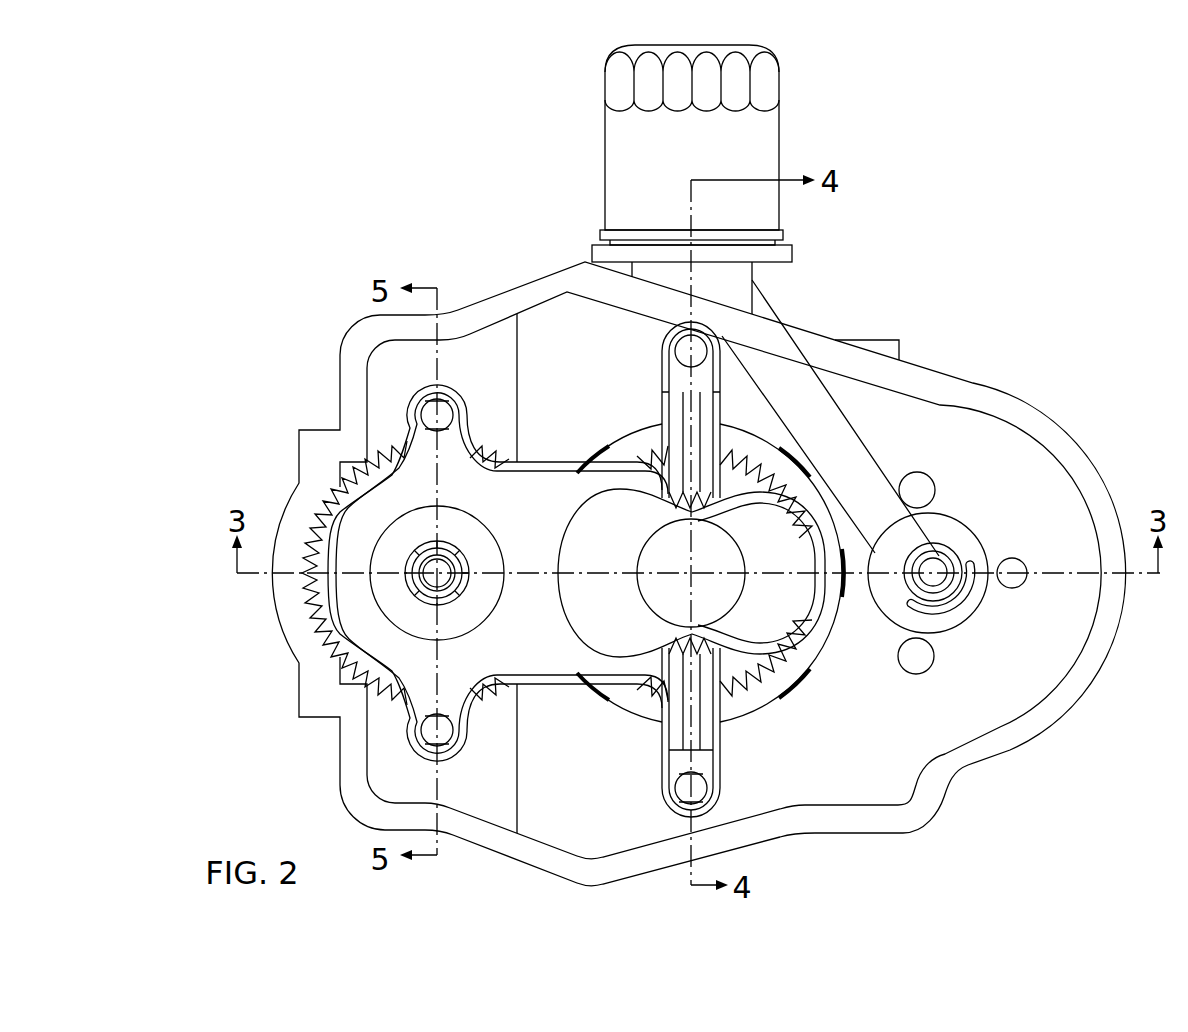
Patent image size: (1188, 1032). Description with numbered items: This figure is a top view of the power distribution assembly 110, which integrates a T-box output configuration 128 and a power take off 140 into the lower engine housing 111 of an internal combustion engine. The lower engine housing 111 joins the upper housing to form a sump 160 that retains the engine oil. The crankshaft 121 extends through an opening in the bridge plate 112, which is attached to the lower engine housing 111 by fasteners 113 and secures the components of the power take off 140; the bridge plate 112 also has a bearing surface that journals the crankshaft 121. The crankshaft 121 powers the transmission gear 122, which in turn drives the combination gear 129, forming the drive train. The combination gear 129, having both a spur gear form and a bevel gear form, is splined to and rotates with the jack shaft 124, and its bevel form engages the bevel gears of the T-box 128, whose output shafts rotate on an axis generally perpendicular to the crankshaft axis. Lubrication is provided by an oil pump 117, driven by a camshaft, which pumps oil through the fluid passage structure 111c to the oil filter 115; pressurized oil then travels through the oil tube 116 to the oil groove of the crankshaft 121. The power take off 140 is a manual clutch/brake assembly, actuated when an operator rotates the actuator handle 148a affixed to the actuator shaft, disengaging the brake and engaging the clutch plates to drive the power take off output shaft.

The power distribution assembly 110 is at (1078, 124).
The lower engine housing 111 is at (984, 384).
The fluid passage structure 111c is at (848, 447).
The bridge plate 112 is at (516, 511).
The fasteners 113 is at (430, 742).
The oil filter 115 is at (672, 154).
The oil tube 116 is at (683, 386).
The oil pump 117 is at (995, 627).
The crankshaft 121 is at (650, 564).
The transmission gear 122 is at (748, 690).
The jack shaft 124 is at (455, 578).
The T-box output configuration 128 is at (500, 705).
The combination gear 129 is at (318, 612).
The power take off 140 is at (825, 702).
The actuator handle 148a is at (878, 340).
The sump 160 is at (597, 344).